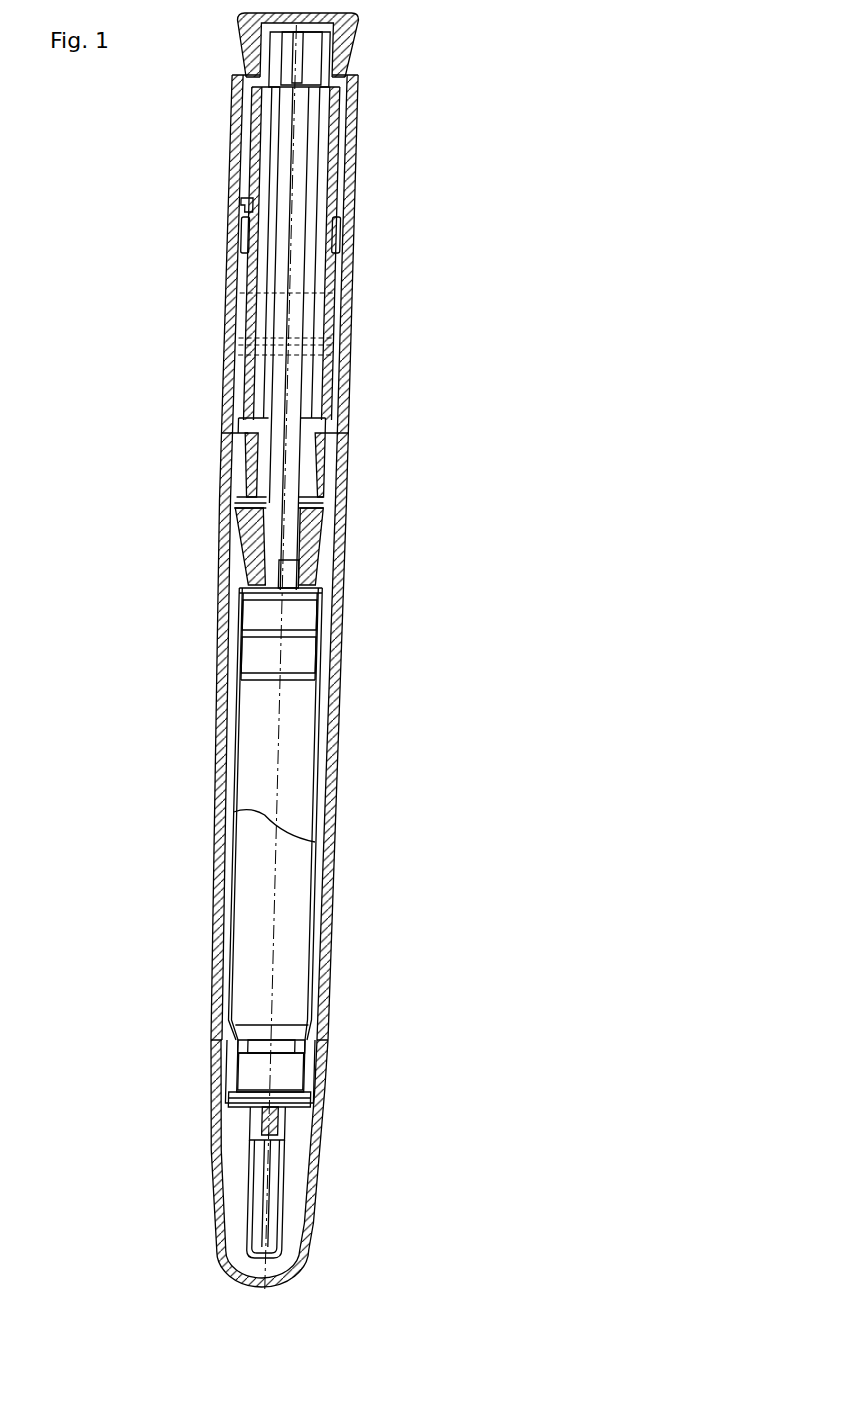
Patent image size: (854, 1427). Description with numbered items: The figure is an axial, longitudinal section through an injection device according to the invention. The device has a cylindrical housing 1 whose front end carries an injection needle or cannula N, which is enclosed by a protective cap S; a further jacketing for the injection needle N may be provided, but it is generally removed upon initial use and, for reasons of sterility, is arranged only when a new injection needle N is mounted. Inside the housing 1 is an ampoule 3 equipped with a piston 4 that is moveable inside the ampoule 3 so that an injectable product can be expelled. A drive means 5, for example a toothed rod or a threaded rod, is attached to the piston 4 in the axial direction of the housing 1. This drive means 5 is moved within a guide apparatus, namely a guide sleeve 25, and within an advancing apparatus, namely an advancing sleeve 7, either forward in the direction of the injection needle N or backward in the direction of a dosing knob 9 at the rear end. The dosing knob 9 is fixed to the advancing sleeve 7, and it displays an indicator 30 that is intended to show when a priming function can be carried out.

The housing 1 is at (328, 893).
The ampoule 3 is at (293, 773).
The piston 4 is at (297, 647).
The drive means 5 is at (283, 561).
The advancing sleeve 7 is at (313, 447).
The dosing knob 9 is at (335, 62).
The guide sleeve 25 is at (315, 530).
The indicator 30 is at (250, 205).
The injection needle N is at (267, 1163).
The protective cap S is at (310, 1253).